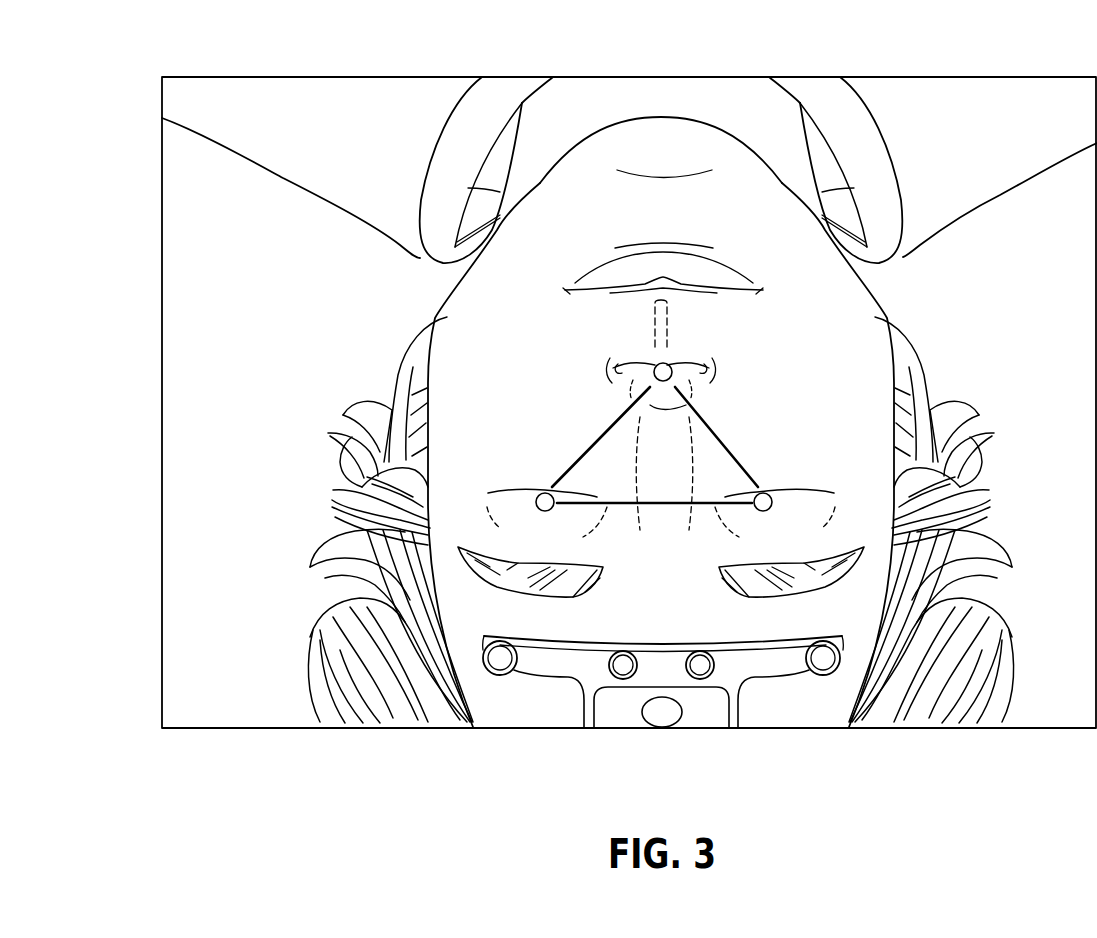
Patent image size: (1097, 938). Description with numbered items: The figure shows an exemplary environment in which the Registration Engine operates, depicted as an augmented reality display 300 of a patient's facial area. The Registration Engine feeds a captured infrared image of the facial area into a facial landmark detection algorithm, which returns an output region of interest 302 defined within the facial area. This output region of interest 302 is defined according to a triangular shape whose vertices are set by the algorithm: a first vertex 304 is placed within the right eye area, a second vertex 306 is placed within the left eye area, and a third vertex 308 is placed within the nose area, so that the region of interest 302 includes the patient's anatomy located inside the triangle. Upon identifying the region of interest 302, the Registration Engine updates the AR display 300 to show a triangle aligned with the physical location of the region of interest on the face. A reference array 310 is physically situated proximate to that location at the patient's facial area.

The augmented reality display 300 is at (679, 41).
The output region of interest 302 is at (682, 452).
The first vertex 304 is at (538, 495).
The second vertex 306 is at (773, 497).
The third vertex 308 is at (671, 369).
The reference array 310 is at (662, 640).